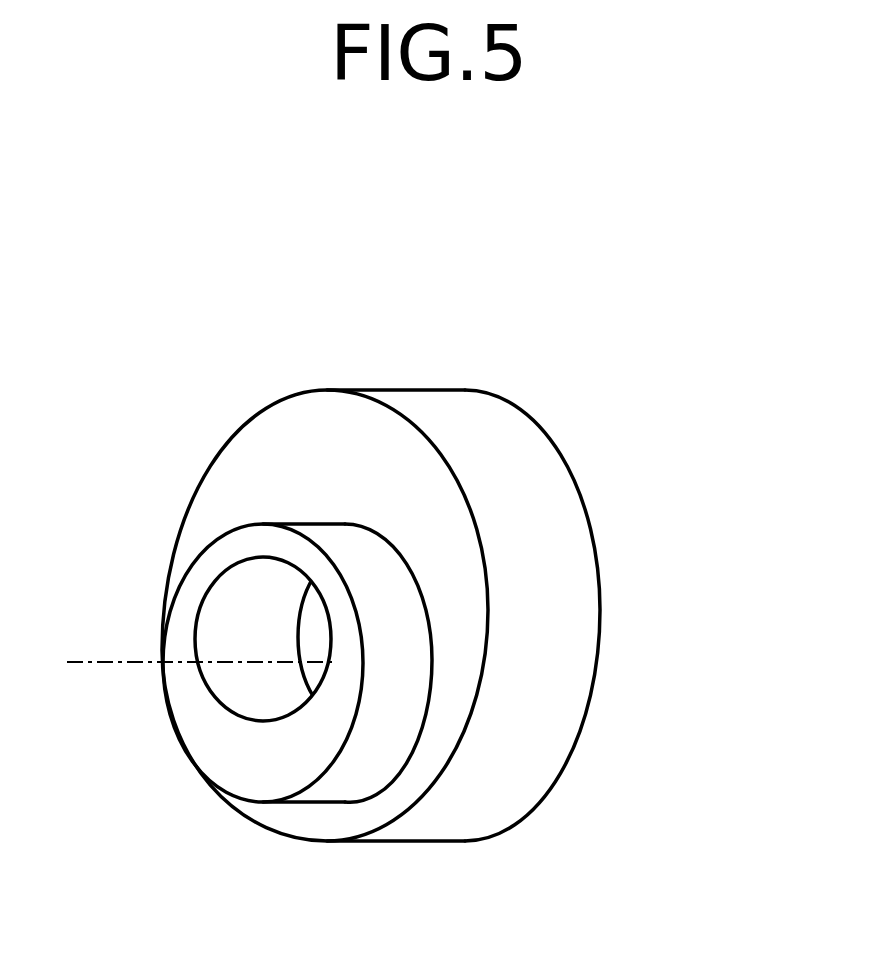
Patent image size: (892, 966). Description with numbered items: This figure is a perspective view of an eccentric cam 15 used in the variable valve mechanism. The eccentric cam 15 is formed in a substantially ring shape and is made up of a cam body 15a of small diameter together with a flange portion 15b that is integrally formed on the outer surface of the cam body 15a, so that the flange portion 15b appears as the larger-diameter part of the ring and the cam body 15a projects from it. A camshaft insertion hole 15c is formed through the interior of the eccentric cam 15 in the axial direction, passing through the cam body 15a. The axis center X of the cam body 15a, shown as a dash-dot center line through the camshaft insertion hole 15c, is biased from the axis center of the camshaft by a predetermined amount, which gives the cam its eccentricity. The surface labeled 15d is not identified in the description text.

The eccentric cam 15 is at (401, 614).
The cam body 15a is at (253, 782).
The flange portion 15b is at (568, 597).
The camshaft insertion hole 15c is at (247, 692).
The boss portion outer peripheral surface 15d is at (360, 767).
The axis center of cam body x is at (103, 662).